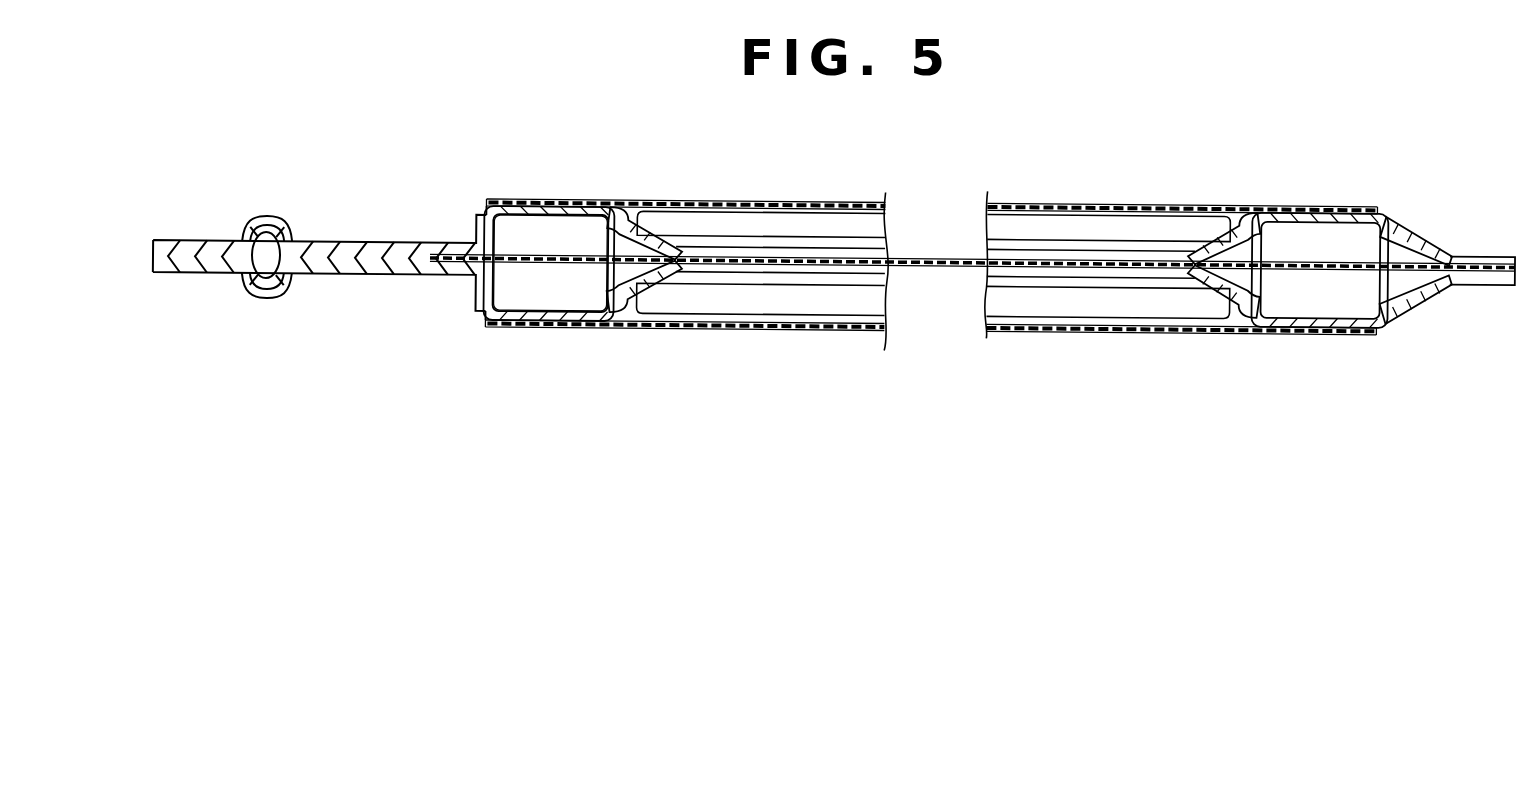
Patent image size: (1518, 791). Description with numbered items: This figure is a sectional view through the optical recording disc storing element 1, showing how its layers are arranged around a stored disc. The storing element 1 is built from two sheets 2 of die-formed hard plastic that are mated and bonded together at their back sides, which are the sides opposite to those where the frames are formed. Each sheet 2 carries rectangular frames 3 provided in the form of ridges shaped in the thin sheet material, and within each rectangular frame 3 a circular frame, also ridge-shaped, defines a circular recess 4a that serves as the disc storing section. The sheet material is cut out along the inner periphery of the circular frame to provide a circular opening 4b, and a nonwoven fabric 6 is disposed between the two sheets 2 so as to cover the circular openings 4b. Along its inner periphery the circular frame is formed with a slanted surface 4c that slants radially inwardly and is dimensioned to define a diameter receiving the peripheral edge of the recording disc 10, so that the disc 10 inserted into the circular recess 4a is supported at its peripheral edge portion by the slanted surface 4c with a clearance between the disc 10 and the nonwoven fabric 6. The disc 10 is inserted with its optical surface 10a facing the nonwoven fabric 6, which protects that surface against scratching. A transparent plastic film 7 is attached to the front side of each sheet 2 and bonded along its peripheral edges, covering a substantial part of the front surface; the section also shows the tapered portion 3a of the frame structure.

The optical recording disc storing element 1 is at (352, 194).
The sheet 2 is at (478, 222).
The rectangular frame 3 is at (578, 210).
The tapered end portion of body 3a is at (530, 210).
The circular recess 4a is at (1252, 224).
The circular opening 4b is at (688, 250).
The slanted surface 4c is at (676, 238).
The nonwoven fabric 6 is at (565, 265).
The film 7 is at (653, 203).
The recording disc 10 is at (836, 212).
The optical surface 10a is at (1057, 240).